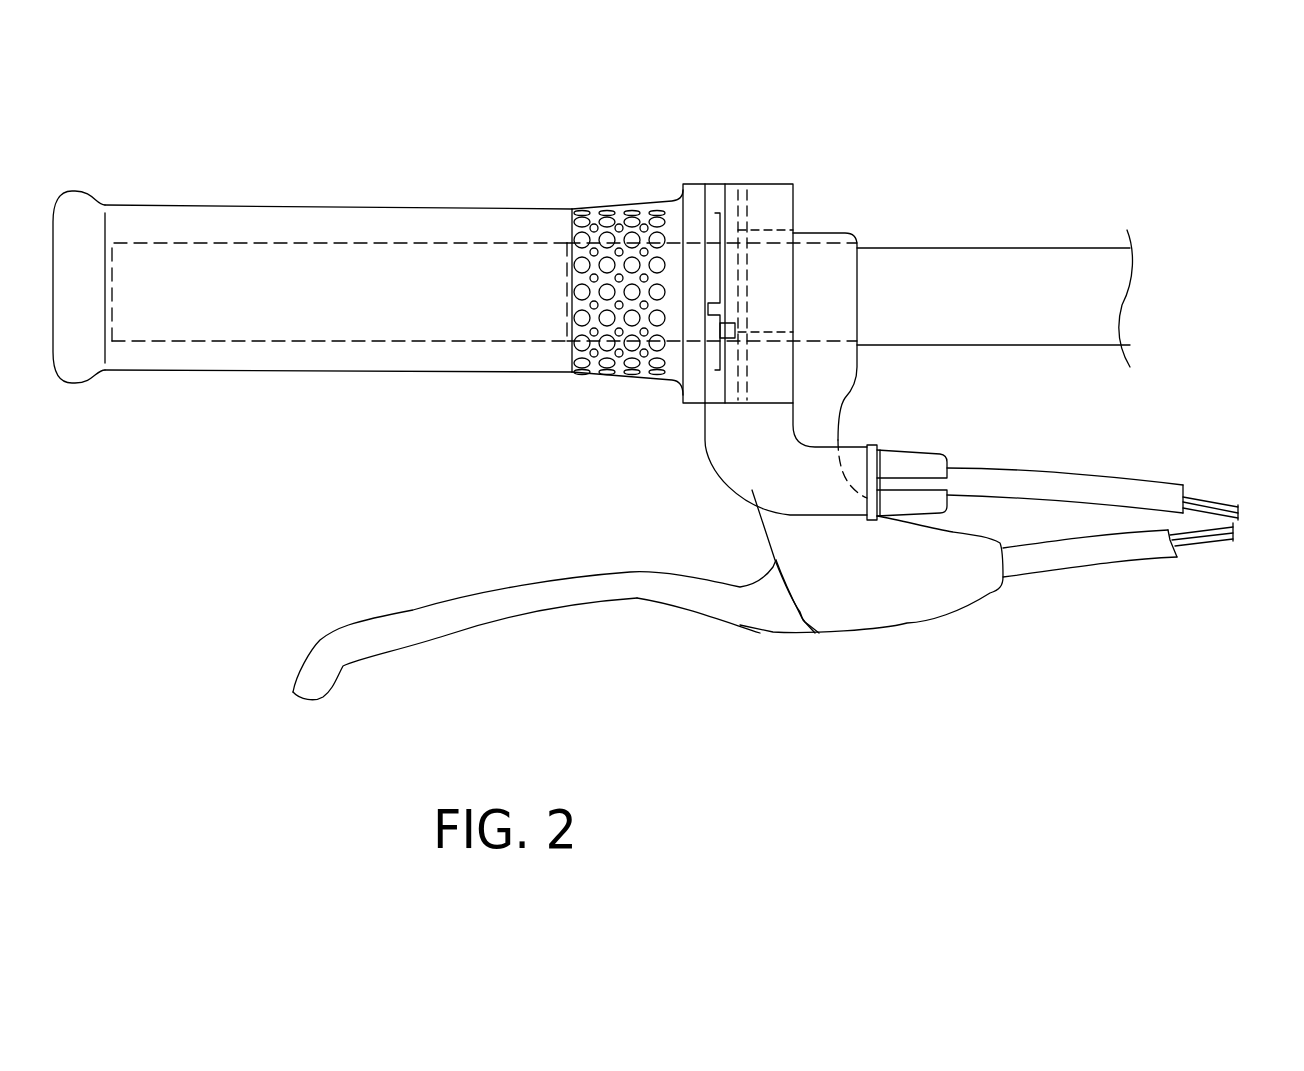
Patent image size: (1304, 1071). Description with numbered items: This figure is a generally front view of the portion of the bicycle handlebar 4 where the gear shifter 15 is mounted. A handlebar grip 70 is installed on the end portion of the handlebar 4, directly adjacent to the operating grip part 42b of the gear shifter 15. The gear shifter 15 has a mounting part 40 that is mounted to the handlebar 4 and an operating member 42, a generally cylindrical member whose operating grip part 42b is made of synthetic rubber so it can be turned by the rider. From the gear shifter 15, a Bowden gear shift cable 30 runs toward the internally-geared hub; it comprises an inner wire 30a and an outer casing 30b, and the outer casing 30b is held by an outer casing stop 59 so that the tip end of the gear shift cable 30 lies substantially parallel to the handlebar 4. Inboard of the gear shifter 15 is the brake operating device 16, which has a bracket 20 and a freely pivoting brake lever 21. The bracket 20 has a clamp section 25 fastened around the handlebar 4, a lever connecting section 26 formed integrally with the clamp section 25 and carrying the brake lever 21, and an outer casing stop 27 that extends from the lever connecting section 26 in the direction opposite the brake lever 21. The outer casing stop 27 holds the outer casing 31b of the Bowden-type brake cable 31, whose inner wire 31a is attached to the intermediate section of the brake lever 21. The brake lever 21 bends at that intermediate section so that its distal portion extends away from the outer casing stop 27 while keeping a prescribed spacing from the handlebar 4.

The handlebar 4 is at (1010, 248).
The gear shifter 15 is at (712, 211).
The brake operating device 16 is at (822, 296).
The bracket 20 is at (648, 618).
The brake lever 21 is at (640, 593).
The clamp section 25 is at (850, 293).
The lever connecting section 26 is at (823, 405).
The outer casing stop 27 is at (969, 594).
The Bowden gear shift cable 30 is at (1114, 442).
The inner wire 30a is at (1215, 500).
The outer casing 30b is at (1113, 487).
The Bowden-type brake cable 31 is at (1135, 611).
The inner wire 31a is at (1210, 537).
The outer casing 31b is at (1142, 553).
The mounting part 40 is at (793, 184).
The operating member 42 is at (635, 222).
The operating grip part 42b is at (648, 203).
The outer casing stop 59 is at (920, 457).
The handlebar grip 70 is at (423, 208).